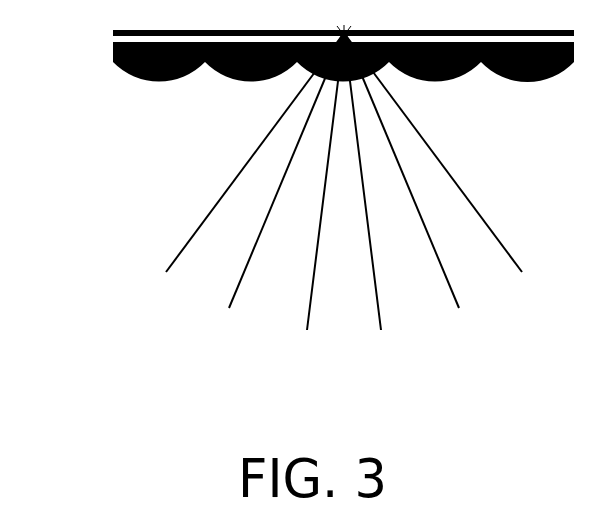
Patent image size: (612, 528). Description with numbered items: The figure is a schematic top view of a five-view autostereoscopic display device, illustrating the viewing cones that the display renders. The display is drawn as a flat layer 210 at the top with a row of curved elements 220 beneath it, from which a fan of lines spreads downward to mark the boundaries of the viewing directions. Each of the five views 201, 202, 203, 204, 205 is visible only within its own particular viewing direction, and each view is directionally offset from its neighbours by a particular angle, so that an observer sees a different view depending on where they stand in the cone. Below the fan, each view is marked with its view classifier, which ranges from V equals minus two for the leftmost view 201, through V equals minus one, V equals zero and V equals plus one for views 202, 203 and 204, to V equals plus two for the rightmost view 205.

The light source / backlight layer 210 is at (113, 33).
The lenticular lens array 220 is at (113, 48).
The view 201 is at (192, 337).
The view 202 is at (261, 367).
The view 203 is at (336, 378).
The view 204 is at (425, 369).
The view 205 is at (497, 337).